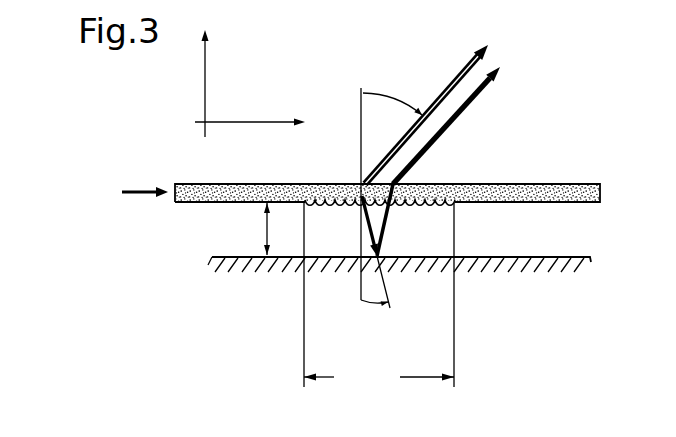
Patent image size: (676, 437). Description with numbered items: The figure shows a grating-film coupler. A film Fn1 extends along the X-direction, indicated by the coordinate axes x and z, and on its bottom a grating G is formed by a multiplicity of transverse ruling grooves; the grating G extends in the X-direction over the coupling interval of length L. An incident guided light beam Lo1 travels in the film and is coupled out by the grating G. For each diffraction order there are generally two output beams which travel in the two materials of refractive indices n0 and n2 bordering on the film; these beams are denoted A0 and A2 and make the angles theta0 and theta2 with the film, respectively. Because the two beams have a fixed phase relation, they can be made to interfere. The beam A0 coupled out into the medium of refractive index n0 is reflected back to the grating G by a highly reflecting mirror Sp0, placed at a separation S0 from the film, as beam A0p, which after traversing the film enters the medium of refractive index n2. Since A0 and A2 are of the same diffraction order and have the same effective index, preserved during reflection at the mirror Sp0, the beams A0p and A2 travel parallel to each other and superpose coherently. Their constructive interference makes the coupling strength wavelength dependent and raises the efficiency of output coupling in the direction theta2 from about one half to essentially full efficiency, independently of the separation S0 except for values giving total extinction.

The incident guided light beam Lo1 is at (134, 196).
The film of refractive index n1 Fn1 is at (244, 184).
The grating G is at (422, 205).
The refractive index of the medium below the film n0 is at (207, 229).
The refractive index of the medium above the film n2 is at (495, 151).
The mirror Sp0 is at (242, 263).
The separation between film and mirror S0 is at (278, 229).
The output beam in the medium of refractive index n0 A0 is at (359, 226).
The reflected beam A0' A0p is at (460, 151).
The output beam in the medium of refractive index n2 A2 is at (426, 105).
The angle of beam A2 with the film theta2 is at (392, 95).
The angle of beam A0 with the film theta0 is at (375, 295).
The coupling interval length L is at (379, 297).
The Z-direction axis z is at (213, 83).
The X-direction axis x is at (250, 109).